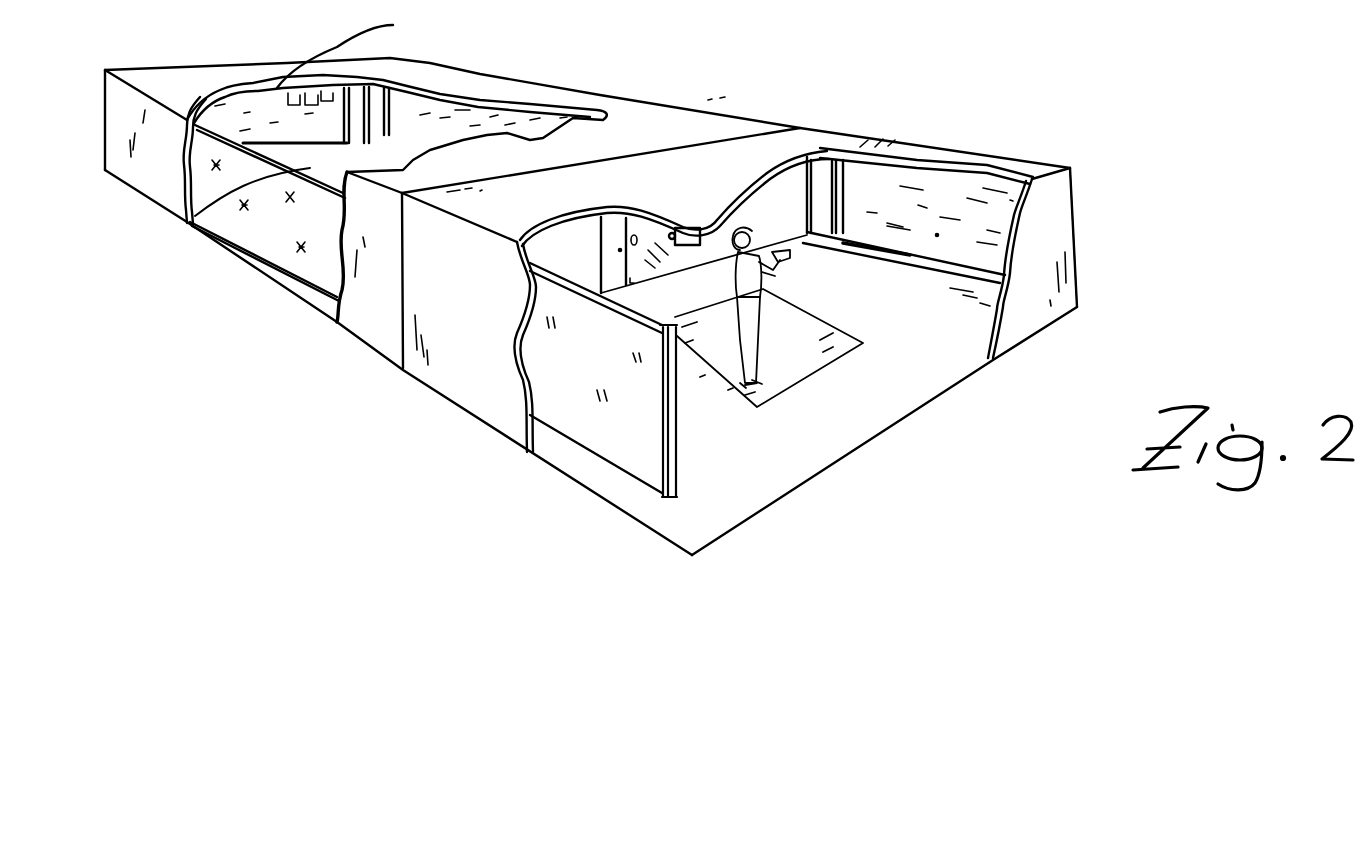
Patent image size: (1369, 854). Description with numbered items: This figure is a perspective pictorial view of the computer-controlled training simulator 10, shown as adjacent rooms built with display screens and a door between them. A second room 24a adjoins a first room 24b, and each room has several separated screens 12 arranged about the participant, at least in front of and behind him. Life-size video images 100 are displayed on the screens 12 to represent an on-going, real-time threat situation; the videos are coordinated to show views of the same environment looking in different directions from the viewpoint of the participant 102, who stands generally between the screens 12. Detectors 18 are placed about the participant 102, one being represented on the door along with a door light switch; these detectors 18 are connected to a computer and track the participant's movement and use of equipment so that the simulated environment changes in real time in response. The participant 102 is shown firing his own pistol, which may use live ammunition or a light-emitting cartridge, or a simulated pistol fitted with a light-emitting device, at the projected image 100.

The computer-controlled training simulator 10 is at (717, 88).
The screens 12 is at (250, 100).
The detectors 18 is at (680, 487).
The second room 24a is at (187, 222).
The first room 24b is at (930, 373).
The life-size video images 100 is at (445, 113).
The participant 102 is at (763, 357).